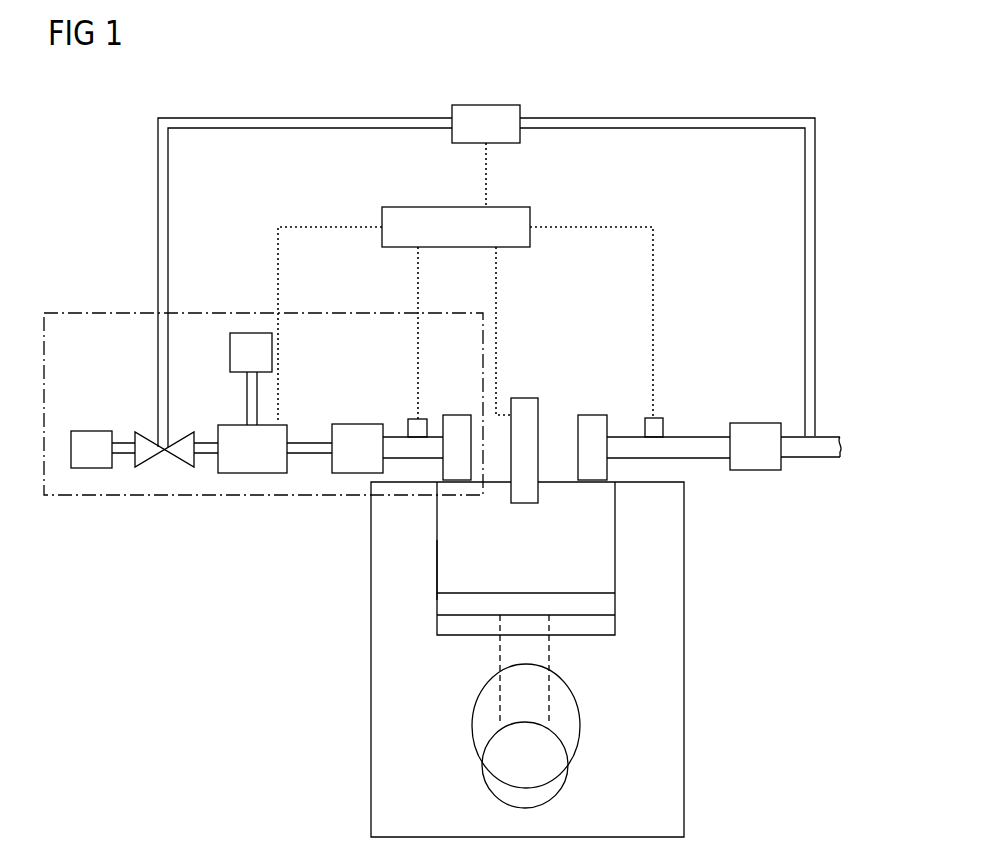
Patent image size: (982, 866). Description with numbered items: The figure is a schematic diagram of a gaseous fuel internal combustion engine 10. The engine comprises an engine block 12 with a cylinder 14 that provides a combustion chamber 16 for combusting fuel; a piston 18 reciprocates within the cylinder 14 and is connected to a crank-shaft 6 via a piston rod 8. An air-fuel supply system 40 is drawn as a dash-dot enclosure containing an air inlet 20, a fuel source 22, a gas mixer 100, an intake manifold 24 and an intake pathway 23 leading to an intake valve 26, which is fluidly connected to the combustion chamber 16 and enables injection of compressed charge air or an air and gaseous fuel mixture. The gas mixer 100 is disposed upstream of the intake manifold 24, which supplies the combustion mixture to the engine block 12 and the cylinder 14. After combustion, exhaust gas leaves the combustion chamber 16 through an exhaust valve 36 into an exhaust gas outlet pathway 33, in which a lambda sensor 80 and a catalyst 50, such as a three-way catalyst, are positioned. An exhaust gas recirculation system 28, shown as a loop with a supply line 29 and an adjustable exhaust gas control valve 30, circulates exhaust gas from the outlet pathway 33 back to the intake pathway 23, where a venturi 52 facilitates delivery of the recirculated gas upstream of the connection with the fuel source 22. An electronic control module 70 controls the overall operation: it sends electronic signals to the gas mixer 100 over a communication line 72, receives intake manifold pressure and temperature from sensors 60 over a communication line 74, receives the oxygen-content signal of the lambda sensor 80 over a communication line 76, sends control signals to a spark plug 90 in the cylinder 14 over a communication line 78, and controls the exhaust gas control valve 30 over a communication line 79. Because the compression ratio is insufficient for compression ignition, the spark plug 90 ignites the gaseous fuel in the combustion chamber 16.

The crank-shaft 6 is at (556, 776).
The piston rod 8 is at (551, 655).
The gaseous fuel internal combustion engine 10 is at (190, 720).
The engine block 12 is at (686, 677).
The cylinder 14 is at (617, 550).
The combustion chamber 16 is at (446, 559).
The piston 18 is at (605, 602).
The air inlet 20 is at (94, 437).
The fuel source 22 is at (240, 356).
The intake pathway 23 is at (410, 452).
The intake manifold 24 is at (360, 431).
The intake valve 26 is at (460, 422).
The exhaust gas recirculation system 28 is at (745, 72).
The supply line 29 is at (163, 197).
The exhaust gas control valve 30 is at (487, 113).
The exhaust gas outlet pathway 33 is at (698, 449).
The exhaust valve 36 is at (596, 424).
The air-fuel supply system 40 is at (112, 312).
The catalyst 50 is at (758, 462).
The venturi 52 is at (183, 457).
The intake manifold pressure and temperature sensors 60 is at (414, 428).
The electronic control module 70 is at (454, 214).
The communication line 72 is at (280, 262).
The communication line 74 is at (420, 270).
The communication line 76 is at (655, 280).
The communication line 78 is at (498, 290).
The communication line 79 is at (488, 168).
The lambda sensor 80 is at (667, 426).
The spark plug 90 is at (525, 408).
The gas mixer 100 is at (252, 460).